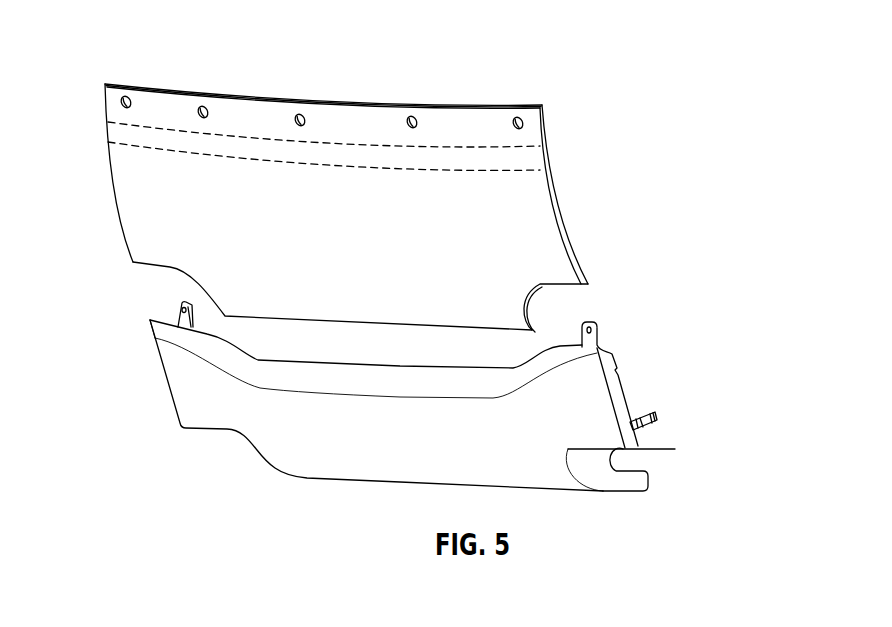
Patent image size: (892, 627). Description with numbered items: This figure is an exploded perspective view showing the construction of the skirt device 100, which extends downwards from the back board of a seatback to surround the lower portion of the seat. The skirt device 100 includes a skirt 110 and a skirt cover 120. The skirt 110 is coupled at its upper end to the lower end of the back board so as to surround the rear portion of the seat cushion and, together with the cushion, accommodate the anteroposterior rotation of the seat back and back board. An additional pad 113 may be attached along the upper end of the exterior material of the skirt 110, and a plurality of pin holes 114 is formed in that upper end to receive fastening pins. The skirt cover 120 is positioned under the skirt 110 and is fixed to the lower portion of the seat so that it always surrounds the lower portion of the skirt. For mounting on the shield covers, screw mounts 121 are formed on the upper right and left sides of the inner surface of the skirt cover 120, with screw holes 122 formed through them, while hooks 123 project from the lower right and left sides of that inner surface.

The skirt device 100 is at (664, 84).
The skirt 110 is at (398, 174).
The additional pad 113 is at (248, 110).
The pin holes 114 is at (411, 118).
The skirt cover 120 is at (409, 372).
The screw mounts 121 is at (176, 316).
The screw holes 122 is at (180, 307).
The hooks 123 is at (656, 412).